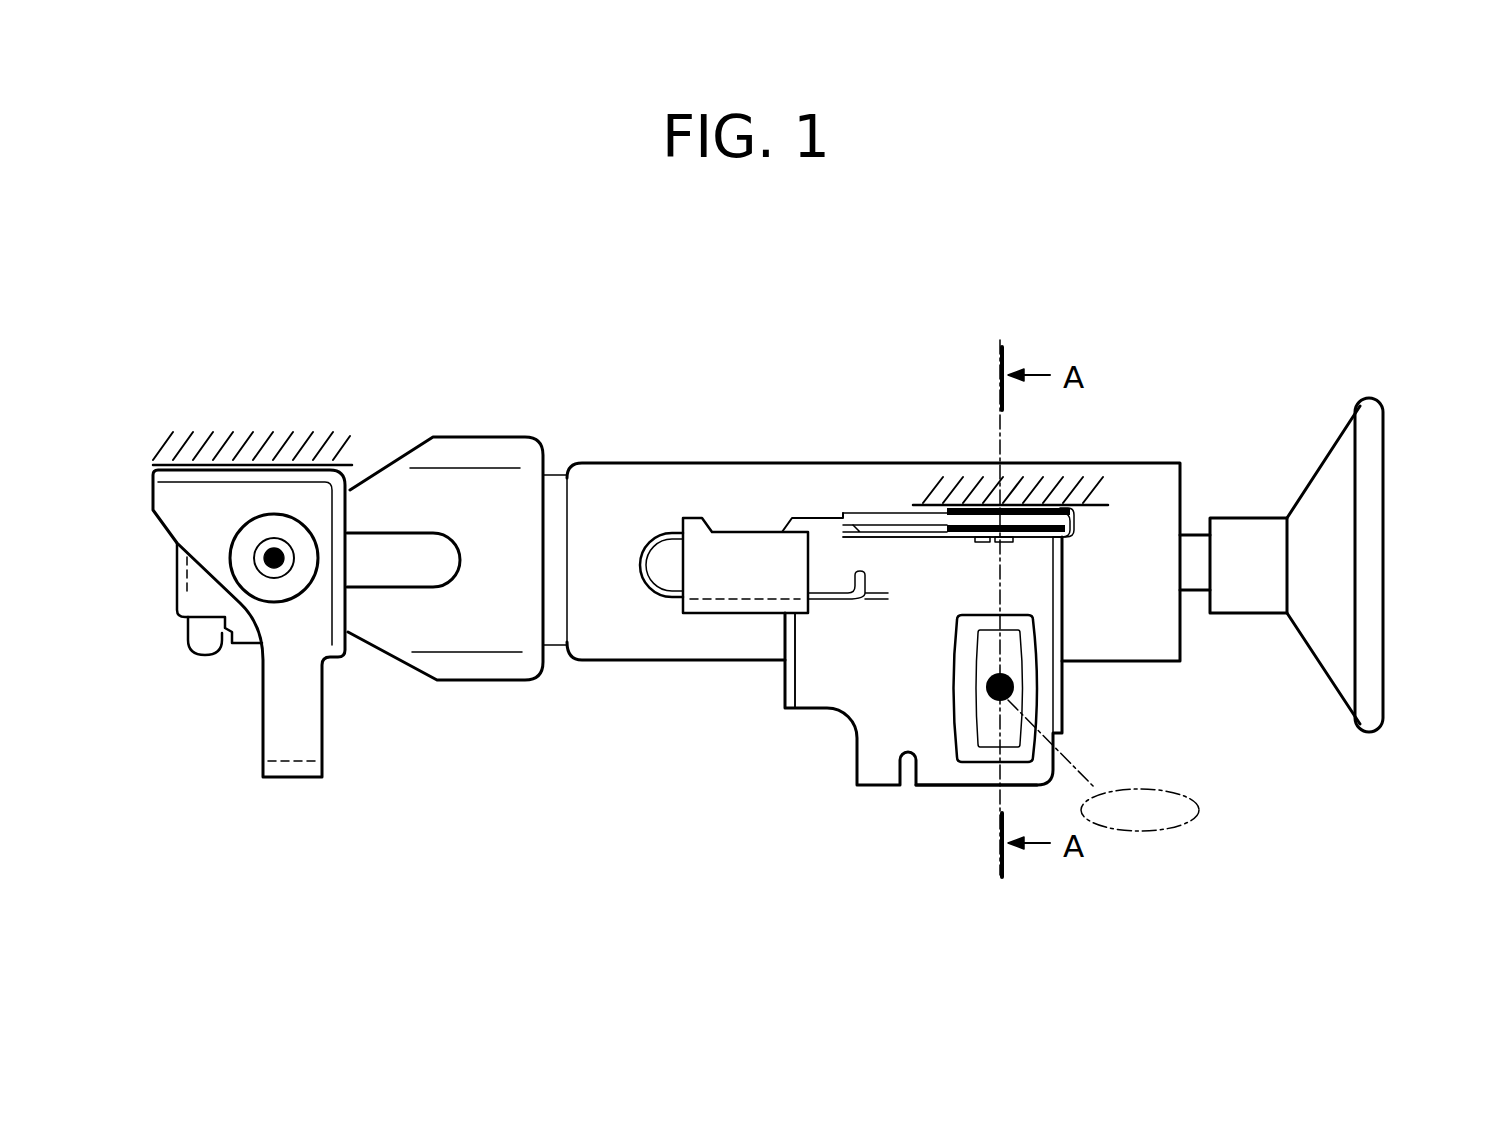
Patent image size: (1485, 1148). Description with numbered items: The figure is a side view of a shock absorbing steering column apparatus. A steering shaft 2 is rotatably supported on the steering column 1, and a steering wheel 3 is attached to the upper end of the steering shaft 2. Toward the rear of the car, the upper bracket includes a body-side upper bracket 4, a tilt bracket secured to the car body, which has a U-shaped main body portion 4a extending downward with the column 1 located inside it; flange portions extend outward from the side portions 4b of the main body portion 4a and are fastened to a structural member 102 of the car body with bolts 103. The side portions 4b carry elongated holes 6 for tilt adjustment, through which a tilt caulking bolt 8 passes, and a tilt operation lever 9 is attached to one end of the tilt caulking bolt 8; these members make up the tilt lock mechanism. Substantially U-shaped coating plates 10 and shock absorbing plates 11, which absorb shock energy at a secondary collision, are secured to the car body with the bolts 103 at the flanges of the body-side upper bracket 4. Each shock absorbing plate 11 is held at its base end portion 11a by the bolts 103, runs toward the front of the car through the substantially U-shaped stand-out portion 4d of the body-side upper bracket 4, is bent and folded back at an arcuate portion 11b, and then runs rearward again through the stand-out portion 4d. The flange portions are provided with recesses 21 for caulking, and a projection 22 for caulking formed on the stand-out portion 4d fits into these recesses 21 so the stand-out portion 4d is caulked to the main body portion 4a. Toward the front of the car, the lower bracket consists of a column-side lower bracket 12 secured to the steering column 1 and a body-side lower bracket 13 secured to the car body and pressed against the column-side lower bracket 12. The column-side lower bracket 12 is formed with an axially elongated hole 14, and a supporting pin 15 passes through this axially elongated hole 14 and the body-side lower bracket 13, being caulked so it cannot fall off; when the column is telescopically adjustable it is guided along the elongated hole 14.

The steering column 1 is at (1137, 463).
The steering shaft 2 is at (1190, 535).
The steering wheel 3 is at (1383, 480).
The body-side upper bracket 4 is at (832, 765).
The main body portion 4a is at (930, 787).
The side portion 4b is at (905, 505).
The stand-out portion 4d is at (717, 614).
The elongated hole for tilt adjustment 6 is at (1012, 661).
The tilt caulking bolt 8 is at (1013, 692).
The tilt operation lever 9 is at (1199, 812).
The coating plate 10 is at (980, 508).
The shock absorbing plate 11 is at (875, 513).
The base end portion 11a is at (1055, 540).
The arcuate portion 11b is at (648, 550).
The column-side lower bracket 12 is at (478, 682).
The body-side lower bracket 13 is at (263, 716).
The axially elongated hole 14 is at (400, 542).
The supporting pin 15 is at (264, 558).
The recess for caulking 21 is at (777, 518).
The projection for caulking 22 is at (727, 518).
The structural member of the car body 102 is at (245, 460).
The bolt 103 is at (1004, 543).